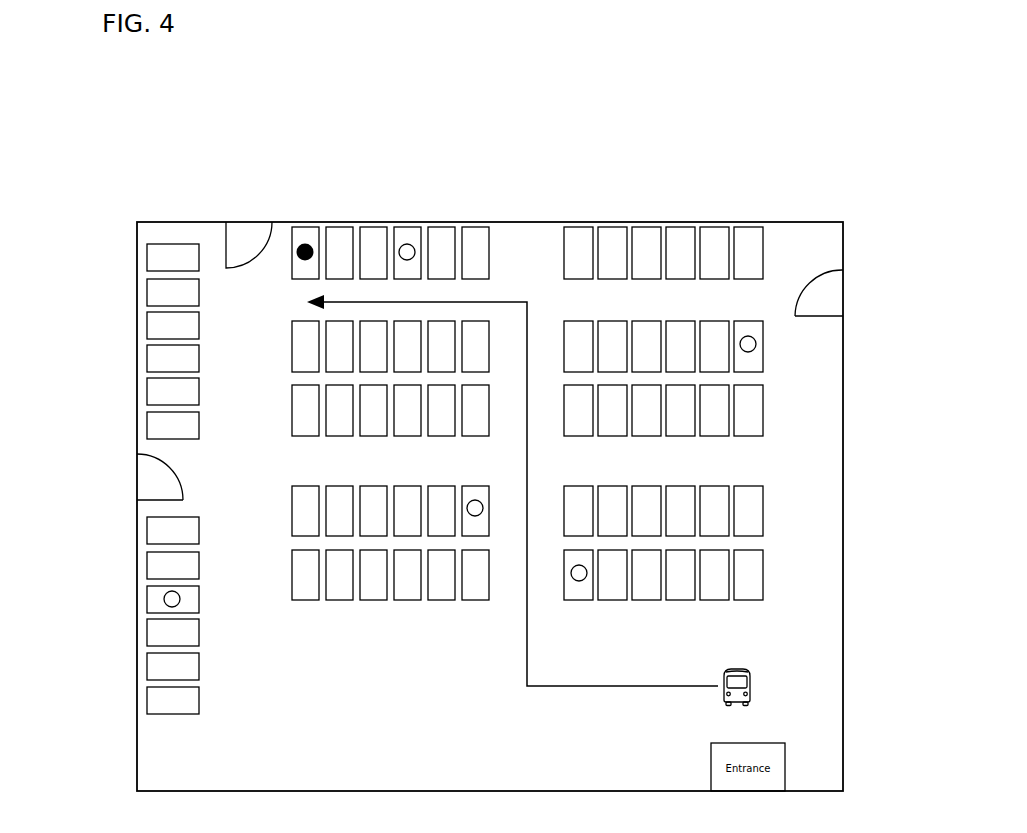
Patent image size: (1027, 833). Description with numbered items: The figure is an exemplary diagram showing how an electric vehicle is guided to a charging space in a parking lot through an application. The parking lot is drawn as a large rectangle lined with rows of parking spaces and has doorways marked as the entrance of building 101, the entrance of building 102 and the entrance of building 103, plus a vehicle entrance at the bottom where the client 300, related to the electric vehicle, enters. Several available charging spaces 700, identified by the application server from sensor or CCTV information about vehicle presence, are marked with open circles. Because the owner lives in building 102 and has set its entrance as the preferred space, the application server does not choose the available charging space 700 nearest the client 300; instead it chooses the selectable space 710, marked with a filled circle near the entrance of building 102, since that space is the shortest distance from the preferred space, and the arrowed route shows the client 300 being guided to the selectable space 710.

The available charging space 700 is at (748, 336).
The selectable space 710 is at (300, 227).
The client 300 is at (753, 687).
The building 101 is at (143, 490).
The building 102 is at (235, 224).
The building 103 is at (830, 303).